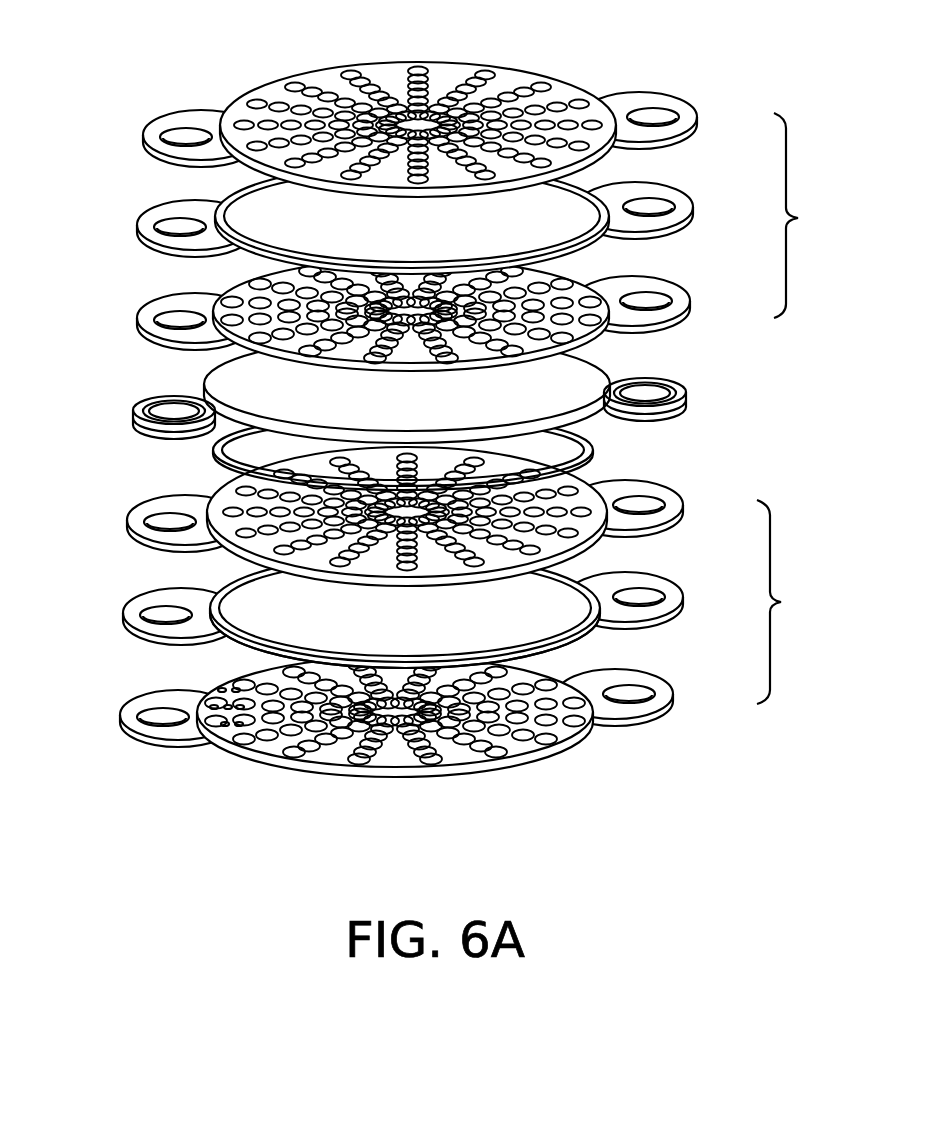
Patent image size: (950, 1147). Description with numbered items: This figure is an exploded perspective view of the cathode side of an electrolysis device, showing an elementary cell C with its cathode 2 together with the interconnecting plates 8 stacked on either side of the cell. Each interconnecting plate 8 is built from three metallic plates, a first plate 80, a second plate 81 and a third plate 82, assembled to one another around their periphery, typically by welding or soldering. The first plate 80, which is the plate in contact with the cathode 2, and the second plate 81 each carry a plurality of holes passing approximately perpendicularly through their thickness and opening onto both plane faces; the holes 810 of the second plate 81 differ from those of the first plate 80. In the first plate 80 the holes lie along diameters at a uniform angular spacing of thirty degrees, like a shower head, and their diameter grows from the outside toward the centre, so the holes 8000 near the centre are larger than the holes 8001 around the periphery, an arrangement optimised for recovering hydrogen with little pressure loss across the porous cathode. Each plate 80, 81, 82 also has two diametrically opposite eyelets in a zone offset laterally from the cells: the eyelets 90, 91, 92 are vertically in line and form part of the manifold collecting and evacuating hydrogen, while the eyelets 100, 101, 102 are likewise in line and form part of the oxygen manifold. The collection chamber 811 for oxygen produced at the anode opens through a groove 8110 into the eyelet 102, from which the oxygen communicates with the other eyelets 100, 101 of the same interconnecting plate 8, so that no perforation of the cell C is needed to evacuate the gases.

The interconnecting plate 8 is at (786, 408).
The second plate 81 is at (300, 82).
The holes of the second plate 810 is at (454, 108).
The oxygen collection chamber 811 is at (398, 244).
The groove 8110 is at (232, 219).
The third plate 82 is at (590, 626).
The first plate 80 is at (235, 297).
The central holes 8000 is at (347, 731).
The peripheral holes 8001 is at (230, 690).
The cathode 2 is at (596, 377).
The elementary electrolysis cell C is at (598, 424).
The eyelet of the first plate 90 is at (684, 303).
The eyelet of the second plate 91 is at (693, 120).
The eyelet of the third plate 92 is at (688, 209).
The eyelet of the first plate 100 is at (145, 318).
The eyelet of the second plate 101 is at (152, 133).
The eyelet of the third plate 102 is at (148, 225).